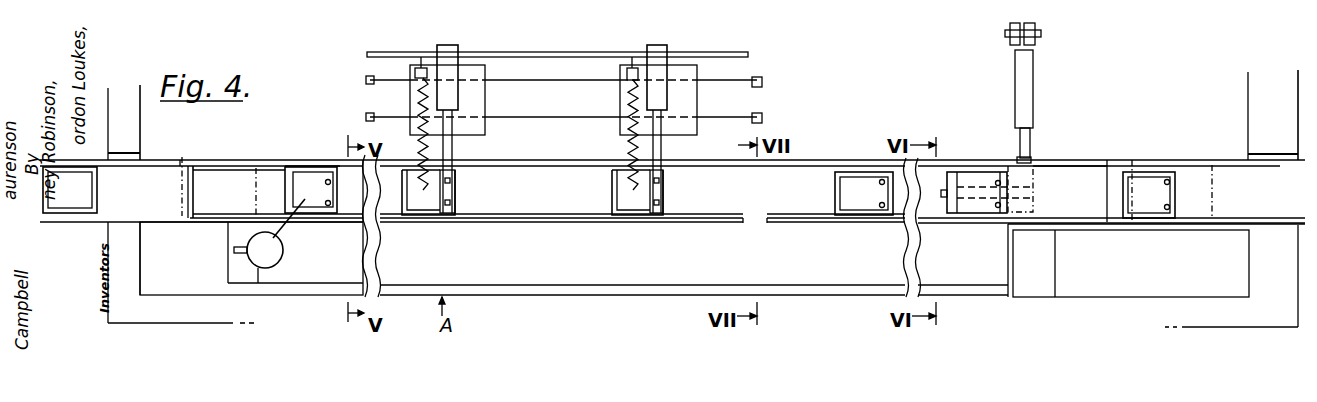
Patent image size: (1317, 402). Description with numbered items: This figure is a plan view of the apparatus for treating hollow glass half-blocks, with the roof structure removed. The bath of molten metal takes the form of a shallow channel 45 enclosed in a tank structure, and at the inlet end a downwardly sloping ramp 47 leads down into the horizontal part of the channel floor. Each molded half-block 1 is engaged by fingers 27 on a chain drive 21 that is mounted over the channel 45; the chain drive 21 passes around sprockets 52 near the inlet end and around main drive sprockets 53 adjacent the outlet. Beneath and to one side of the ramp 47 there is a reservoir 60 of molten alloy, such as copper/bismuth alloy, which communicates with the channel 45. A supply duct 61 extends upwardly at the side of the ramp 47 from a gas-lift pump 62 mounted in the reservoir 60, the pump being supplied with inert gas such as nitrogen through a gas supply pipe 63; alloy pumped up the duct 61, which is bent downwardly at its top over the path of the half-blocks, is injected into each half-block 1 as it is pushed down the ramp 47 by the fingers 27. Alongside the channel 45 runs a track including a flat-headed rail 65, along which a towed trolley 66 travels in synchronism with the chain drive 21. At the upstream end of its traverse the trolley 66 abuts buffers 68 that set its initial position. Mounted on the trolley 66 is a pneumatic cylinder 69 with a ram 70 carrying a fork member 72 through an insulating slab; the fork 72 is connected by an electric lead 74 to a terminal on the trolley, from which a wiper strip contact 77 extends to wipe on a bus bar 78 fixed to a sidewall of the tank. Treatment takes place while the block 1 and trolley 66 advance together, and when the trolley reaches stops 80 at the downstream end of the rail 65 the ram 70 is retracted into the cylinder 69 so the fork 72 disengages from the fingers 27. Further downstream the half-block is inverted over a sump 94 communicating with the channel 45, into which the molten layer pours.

The half-block 1 is at (308, 170).
The chain drive 21 is at (728, 223).
The fingers 27 is at (327, 179).
The shallow channel 45 is at (173, 203).
The downwardly sloping ramp 47 is at (205, 178).
The sprockets 52 is at (175, 153).
The main drive sprockets 53 is at (1197, 158).
The reservoir 60 is at (322, 278).
The supply duct 61 is at (279, 239).
The gas-lift pump 62 is at (259, 268).
The gas supply pipe 63 is at (235, 253).
The flat-headed rail 65 is at (517, 80).
The towed trolley 66 is at (477, 67).
The buffers 68 is at (366, 82).
The pneumatic cylinder 69 is at (448, 45).
The ram 70 is at (443, 148).
The fork member 72 is at (455, 197).
The electric lead 74 is at (420, 133).
The wiper strip contact 77 is at (420, 62).
The bus bar 78 is at (472, 52).
The stops 80 is at (760, 113).
The sump 94 is at (1033, 268).